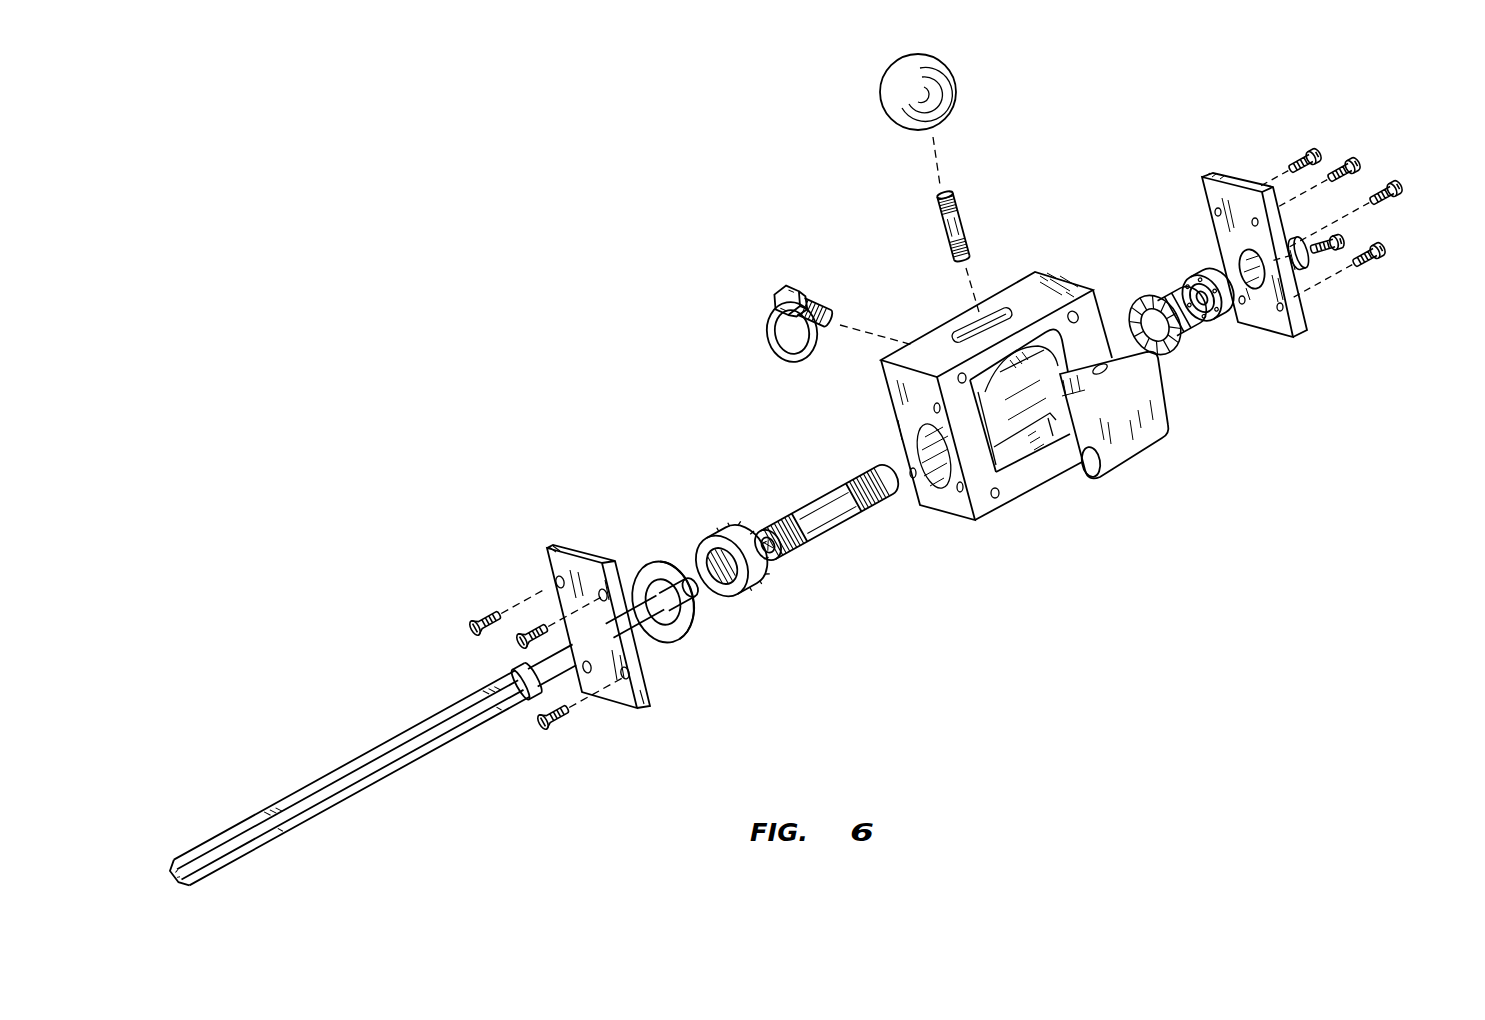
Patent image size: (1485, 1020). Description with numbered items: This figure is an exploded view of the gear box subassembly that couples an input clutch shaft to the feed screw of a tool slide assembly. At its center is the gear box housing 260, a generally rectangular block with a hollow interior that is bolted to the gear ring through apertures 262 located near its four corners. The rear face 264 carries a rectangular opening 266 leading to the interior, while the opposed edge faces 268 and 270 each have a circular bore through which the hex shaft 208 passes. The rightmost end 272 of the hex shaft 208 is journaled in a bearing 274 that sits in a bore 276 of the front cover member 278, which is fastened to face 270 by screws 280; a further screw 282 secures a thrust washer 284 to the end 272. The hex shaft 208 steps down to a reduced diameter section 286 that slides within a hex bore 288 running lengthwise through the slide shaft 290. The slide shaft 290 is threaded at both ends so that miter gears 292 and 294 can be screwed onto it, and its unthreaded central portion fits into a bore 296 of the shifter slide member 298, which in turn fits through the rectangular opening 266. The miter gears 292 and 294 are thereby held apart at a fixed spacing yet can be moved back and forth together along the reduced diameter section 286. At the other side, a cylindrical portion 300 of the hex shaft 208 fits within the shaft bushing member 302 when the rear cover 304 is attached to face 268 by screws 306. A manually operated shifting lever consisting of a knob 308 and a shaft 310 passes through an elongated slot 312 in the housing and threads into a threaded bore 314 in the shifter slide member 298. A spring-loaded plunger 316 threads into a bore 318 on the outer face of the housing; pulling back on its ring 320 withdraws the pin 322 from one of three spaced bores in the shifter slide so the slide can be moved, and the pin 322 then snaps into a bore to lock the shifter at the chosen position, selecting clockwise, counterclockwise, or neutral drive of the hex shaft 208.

The hex shaft 208 is at (308, 818).
The gear box housing 260 is at (932, 512).
The apertures 262 is at (994, 498).
The rear face 264 is at (948, 397).
The rectangular opening 266 is at (968, 382).
The edge face 268 is at (893, 392).
The edge face 270 is at (1063, 273).
The rightmost end of hex shaft 272 is at (698, 593).
The bearing 274 is at (1217, 312).
The bore 276 is at (1243, 266).
The front cover member 278 is at (1300, 337).
The screws 280 is at (1305, 154).
The screw 282 is at (1351, 165).
The thrust washer 284 is at (1303, 252).
The reduced diameter section 286 is at (568, 630).
The bore 288 is at (773, 557).
The slide shaft 290 is at (826, 492).
The miter gear 292 is at (713, 543).
The miter gear 294 is at (1180, 334).
The bore 296 is at (1089, 477).
The shifter slide member 298 is at (1148, 414).
The cylindrical portion 300 is at (528, 694).
The shaft bushing member 302 is at (650, 562).
The rear cover 304 is at (558, 548).
The screws 306 is at (553, 727).
The knob 308 is at (956, 76).
The shaft 310 is at (961, 206).
The elongated slot 312 is at (981, 326).
The threaded bore 314 is at (1109, 352).
The spring-loaded plunger 316 is at (807, 295).
The bore 318 is at (985, 380).
The ring 320 is at (775, 353).
The pin 322 is at (827, 313).